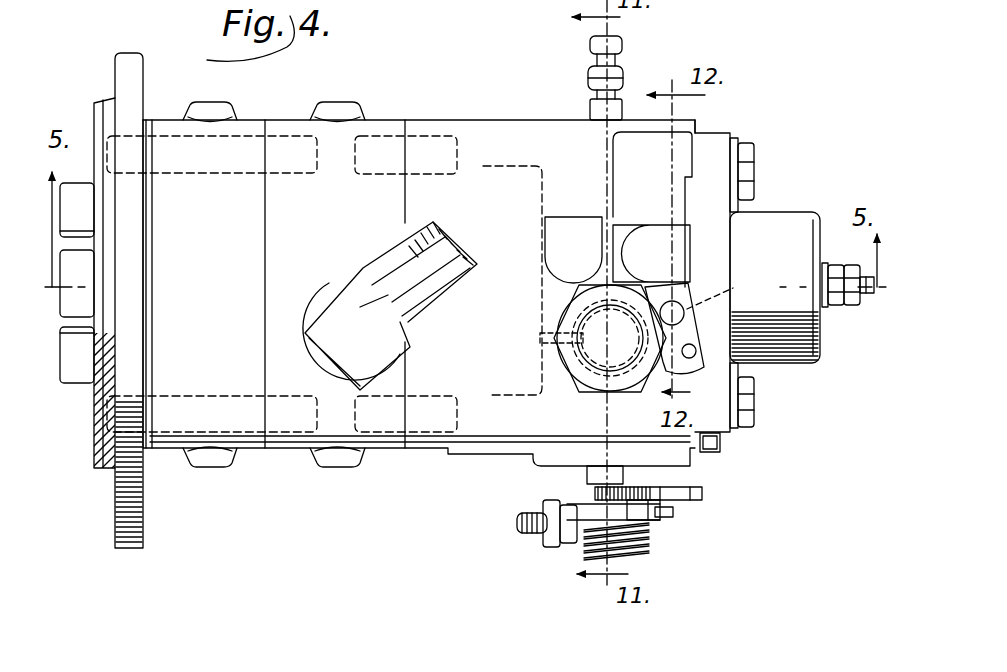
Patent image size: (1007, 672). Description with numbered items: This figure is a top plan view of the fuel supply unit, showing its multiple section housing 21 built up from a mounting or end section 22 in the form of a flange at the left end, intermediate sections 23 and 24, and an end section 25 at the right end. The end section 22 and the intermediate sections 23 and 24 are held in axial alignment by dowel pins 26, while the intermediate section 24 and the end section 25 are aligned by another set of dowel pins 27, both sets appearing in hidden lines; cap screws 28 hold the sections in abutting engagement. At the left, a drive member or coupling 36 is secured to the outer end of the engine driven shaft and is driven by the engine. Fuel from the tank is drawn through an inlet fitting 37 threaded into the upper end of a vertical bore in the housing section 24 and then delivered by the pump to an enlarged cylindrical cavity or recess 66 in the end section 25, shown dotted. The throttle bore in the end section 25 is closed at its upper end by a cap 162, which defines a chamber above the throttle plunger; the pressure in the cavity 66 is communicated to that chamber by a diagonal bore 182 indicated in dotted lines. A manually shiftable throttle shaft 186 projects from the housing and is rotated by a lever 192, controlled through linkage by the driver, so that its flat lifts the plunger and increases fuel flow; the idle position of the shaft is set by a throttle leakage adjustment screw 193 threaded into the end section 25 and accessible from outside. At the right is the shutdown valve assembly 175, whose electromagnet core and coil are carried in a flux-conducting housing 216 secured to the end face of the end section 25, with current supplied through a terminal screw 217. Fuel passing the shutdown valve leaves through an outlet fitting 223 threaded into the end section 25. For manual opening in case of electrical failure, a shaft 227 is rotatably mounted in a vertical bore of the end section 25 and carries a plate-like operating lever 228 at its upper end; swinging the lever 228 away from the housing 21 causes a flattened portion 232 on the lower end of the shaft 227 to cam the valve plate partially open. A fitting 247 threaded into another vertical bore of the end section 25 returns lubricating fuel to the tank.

The multiple section housing 21 is at (487, 119).
The mounting or end section 22 is at (122, 54).
The intermediate section 23 is at (198, 104).
The intermediate section 24 is at (378, 118).
The end section 25 is at (560, 110).
The dowel pins 26 is at (219, 170).
The dowel pins 27 is at (376, 168).
The cap screws 28 is at (756, 161).
The drive member or coupling 36 is at (83, 374).
The inlet fitting 37 is at (393, 251).
The cylindrical cavity or recess 66 is at (507, 396).
The cap 162 is at (590, 391).
The shutdown valve assembly 175 is at (826, 194).
The diagonal bore 182 is at (540, 343).
The throttle shaft 186 is at (622, 47).
The lever 192 is at (704, 494).
The throttle leakage adjustment screw 193 is at (722, 449).
The housing 216 is at (808, 364).
The terminal screw 217 is at (868, 302).
The outlet fitting 223 is at (655, 233).
The shaft 227 is at (674, 332).
The plate-like handle or operating lever 228 is at (728, 362).
The flattened portion 232 is at (747, 294).
The fitting 247 is at (575, 222).